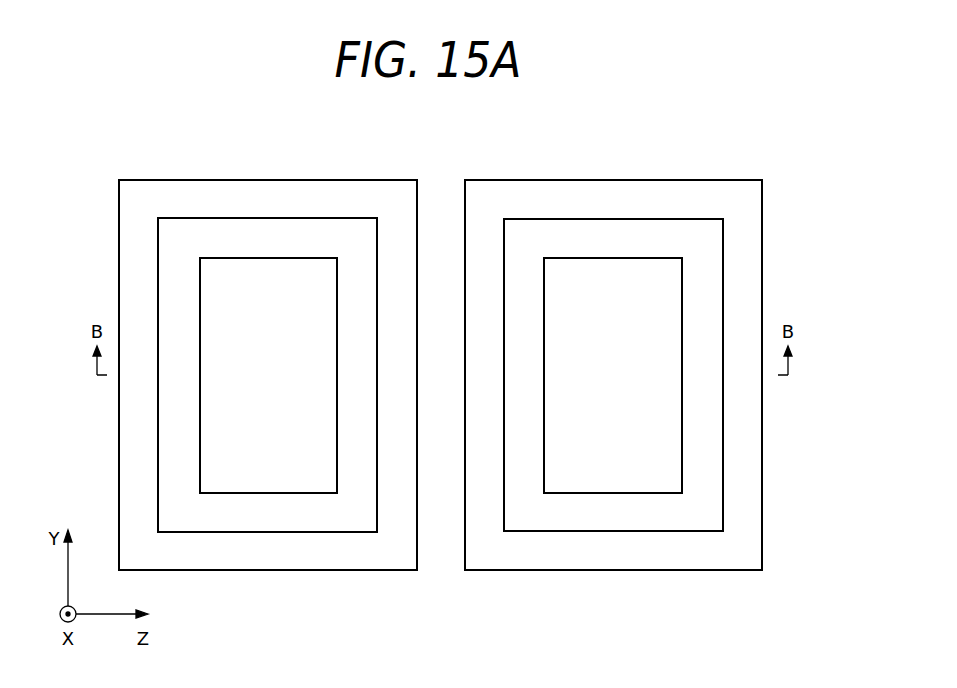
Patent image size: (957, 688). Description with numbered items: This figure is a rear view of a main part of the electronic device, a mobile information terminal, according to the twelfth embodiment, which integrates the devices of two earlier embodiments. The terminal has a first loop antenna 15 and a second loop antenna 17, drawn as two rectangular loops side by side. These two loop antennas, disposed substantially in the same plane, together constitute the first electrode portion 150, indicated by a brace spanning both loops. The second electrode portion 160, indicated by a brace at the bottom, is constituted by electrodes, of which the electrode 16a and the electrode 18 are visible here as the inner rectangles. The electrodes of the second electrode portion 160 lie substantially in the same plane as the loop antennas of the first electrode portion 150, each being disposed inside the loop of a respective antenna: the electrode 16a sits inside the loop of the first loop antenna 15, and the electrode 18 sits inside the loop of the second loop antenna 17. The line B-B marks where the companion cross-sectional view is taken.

The first electrode portion 150 is at (500, 127).
The first loop antenna 15 is at (383, 193).
The second loop antenna 17 is at (486, 193).
The second electrode portion 160 is at (500, 628).
The electrode 16a is at (317, 481).
The electrode 18 is at (580, 483).